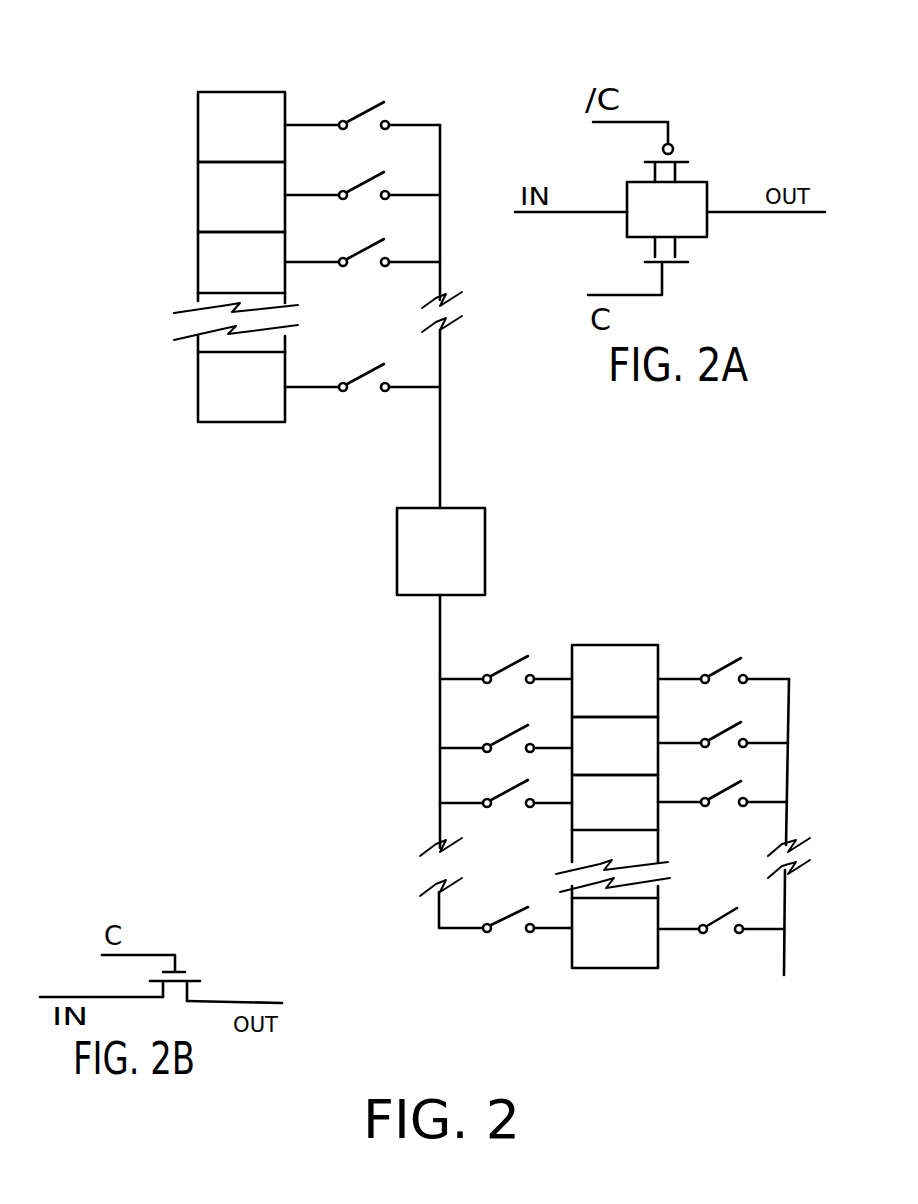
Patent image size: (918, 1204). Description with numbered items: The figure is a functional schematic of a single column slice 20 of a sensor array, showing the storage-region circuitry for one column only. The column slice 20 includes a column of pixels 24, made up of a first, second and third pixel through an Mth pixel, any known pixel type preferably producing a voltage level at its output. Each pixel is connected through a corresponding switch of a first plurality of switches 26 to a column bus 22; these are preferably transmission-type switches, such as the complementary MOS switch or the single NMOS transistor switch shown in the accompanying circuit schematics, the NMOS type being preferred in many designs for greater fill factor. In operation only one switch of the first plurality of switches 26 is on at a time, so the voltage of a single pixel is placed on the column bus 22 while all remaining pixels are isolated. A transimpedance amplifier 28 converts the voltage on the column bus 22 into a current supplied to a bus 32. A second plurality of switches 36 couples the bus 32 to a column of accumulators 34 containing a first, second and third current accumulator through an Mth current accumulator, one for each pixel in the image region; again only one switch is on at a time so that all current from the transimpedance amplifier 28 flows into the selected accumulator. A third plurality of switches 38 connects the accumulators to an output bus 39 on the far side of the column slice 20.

The column slice 20 is at (237, 622).
The column bus 22 is at (442, 152).
The column of pixels 24 is at (222, 70).
The first plurality of switches 26 is at (362, 66).
The transimpedance amplifier 28 is at (485, 523).
The bus 32 is at (440, 647).
The column of accumulators 34 is at (612, 622).
The second plurality of switches 36 is at (510, 636).
The third plurality of switches 38 is at (722, 618).
The output bus 39 is at (790, 700).